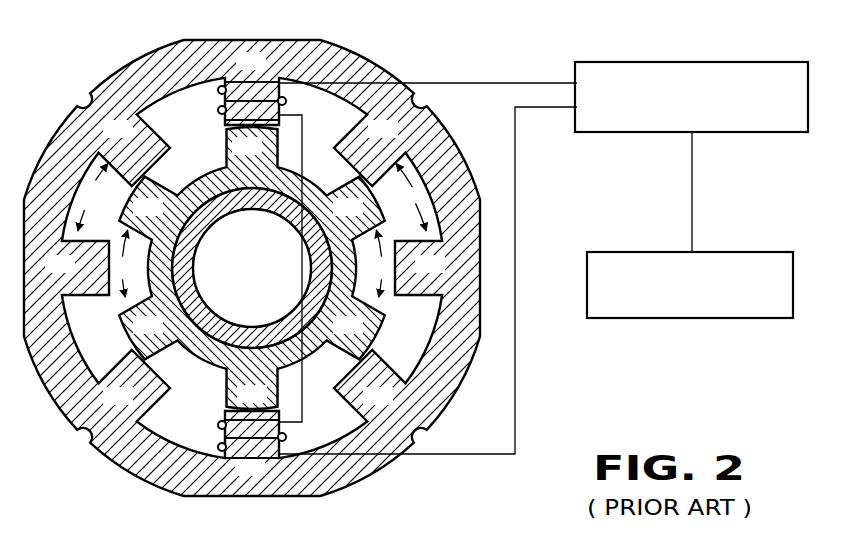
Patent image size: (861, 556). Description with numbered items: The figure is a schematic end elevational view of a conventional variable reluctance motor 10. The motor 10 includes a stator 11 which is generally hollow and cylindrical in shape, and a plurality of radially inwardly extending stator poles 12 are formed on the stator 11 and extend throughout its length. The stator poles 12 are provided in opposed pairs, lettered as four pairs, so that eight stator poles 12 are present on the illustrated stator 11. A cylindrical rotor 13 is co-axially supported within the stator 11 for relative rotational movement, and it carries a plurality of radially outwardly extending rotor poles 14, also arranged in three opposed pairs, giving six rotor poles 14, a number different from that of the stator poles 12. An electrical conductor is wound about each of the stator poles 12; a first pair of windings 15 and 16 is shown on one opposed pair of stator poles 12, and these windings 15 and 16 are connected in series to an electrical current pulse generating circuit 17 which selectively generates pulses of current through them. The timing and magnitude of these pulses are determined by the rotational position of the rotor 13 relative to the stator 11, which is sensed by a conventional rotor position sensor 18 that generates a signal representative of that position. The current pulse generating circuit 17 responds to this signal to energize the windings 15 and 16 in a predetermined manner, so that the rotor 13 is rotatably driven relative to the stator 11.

The variable reluctance motor 10 is at (246, 250).
The stator 11 is at (153, 63).
The stator poles 12 is at (252, 197).
The rotor 13 is at (206, 304).
The rotor poles 14 is at (253, 263).
The winding 15 is at (218, 89).
The winding 16 is at (218, 425).
The current pulse generating circuit 17 is at (733, 62).
The rotor position sensor 18 is at (760, 252).